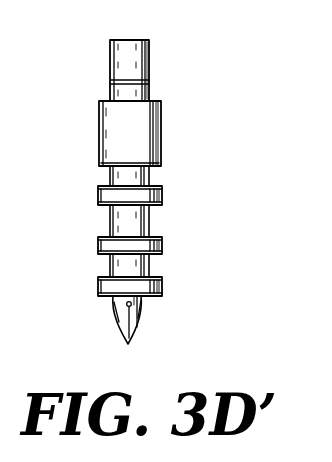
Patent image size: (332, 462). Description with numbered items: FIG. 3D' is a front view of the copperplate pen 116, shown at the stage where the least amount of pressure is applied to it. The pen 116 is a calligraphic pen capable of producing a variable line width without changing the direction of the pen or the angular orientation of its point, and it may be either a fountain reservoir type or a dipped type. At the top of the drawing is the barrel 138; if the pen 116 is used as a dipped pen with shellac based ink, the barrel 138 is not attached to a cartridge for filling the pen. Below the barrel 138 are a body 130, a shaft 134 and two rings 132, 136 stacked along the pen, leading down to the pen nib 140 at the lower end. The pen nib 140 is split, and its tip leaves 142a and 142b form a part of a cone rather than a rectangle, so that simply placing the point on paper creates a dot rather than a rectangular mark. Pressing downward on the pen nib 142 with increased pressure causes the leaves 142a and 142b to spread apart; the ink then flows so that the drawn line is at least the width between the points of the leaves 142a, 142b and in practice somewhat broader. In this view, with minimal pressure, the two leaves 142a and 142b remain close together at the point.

The pen 116 is at (177, 121).
The body 130 is at (99, 122).
The first ring 132 is at (151, 174).
The shaft 134 is at (110, 218).
The second ring 136 is at (151, 266).
The barrel 138 is at (151, 63).
The pen nib 140 is at (150, 334).
The pen nib 142 is at (136, 335).
The tip leaf 142a is at (120, 322).
The tip leaf 142b is at (137, 311).